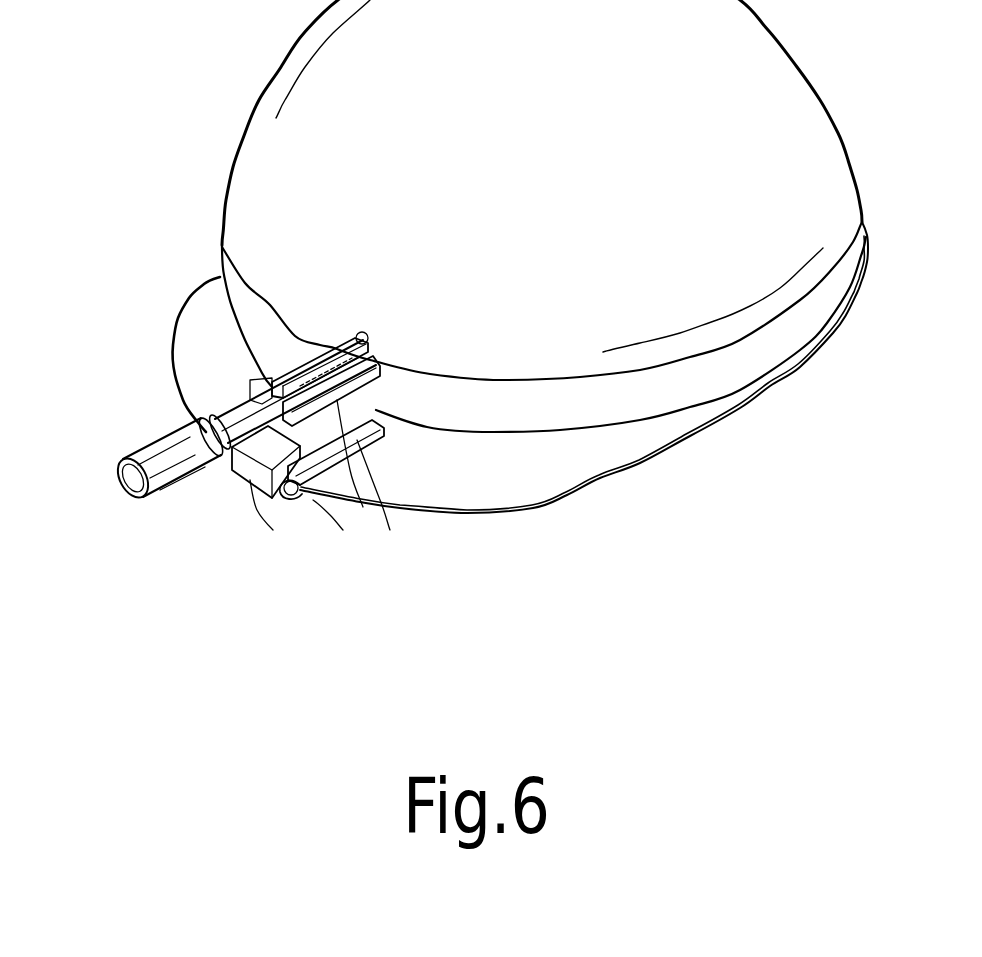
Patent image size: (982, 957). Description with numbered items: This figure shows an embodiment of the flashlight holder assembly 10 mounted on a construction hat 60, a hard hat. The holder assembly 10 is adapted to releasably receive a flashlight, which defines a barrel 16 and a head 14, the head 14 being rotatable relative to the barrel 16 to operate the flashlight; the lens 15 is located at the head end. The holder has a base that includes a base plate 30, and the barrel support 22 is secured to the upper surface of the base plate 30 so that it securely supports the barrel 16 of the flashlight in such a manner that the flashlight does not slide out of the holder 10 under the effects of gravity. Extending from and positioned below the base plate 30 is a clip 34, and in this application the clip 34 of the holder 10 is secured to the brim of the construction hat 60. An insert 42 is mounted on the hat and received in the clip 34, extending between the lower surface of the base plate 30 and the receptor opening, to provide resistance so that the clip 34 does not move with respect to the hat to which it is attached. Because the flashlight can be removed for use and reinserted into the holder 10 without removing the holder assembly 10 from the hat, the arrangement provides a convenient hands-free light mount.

The construction hat 60 is at (498, 76).
The flashlight holder assembly 10 is at (240, 435).
The head 14 is at (131, 456).
The lens 15 is at (120, 478).
The barrel 16 is at (233, 418).
The barrel support 22 is at (270, 383).
The base plate 30 is at (330, 448).
The clip 34 is at (259, 490).
The insert 42 is at (295, 498).